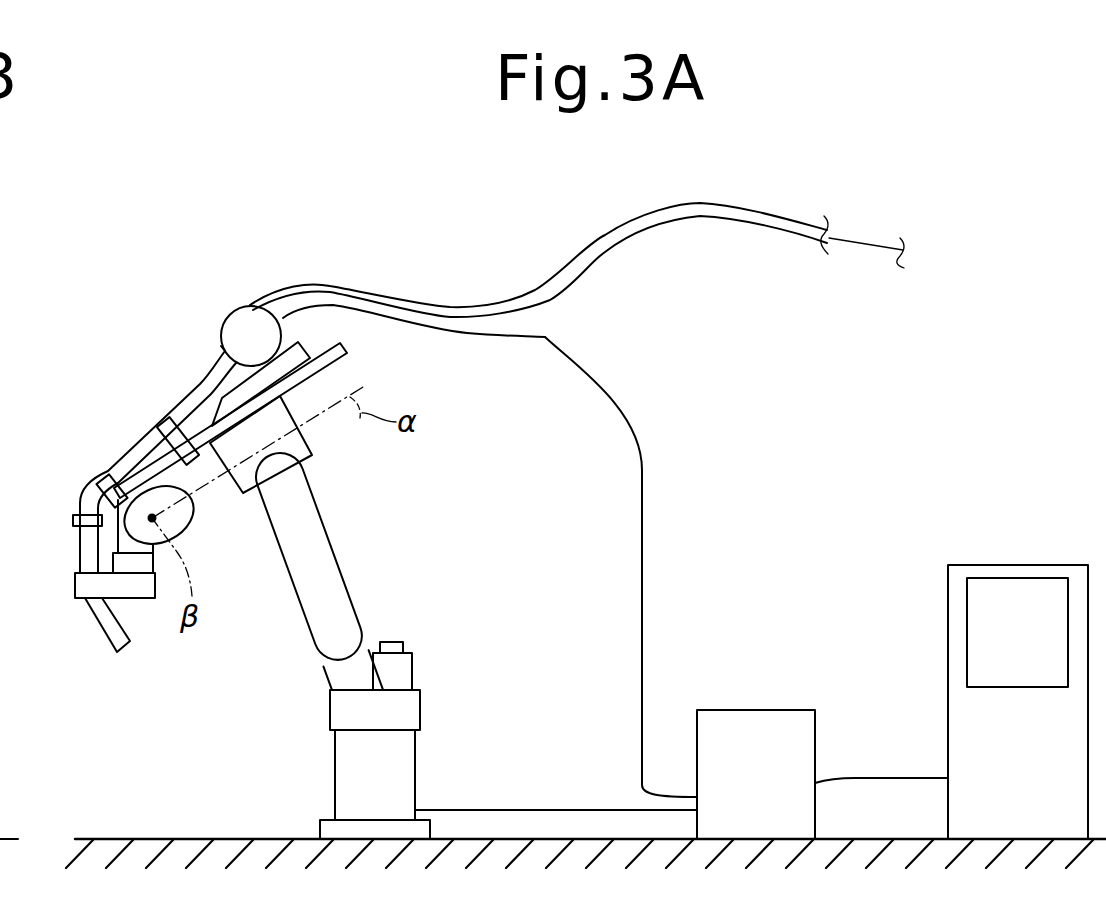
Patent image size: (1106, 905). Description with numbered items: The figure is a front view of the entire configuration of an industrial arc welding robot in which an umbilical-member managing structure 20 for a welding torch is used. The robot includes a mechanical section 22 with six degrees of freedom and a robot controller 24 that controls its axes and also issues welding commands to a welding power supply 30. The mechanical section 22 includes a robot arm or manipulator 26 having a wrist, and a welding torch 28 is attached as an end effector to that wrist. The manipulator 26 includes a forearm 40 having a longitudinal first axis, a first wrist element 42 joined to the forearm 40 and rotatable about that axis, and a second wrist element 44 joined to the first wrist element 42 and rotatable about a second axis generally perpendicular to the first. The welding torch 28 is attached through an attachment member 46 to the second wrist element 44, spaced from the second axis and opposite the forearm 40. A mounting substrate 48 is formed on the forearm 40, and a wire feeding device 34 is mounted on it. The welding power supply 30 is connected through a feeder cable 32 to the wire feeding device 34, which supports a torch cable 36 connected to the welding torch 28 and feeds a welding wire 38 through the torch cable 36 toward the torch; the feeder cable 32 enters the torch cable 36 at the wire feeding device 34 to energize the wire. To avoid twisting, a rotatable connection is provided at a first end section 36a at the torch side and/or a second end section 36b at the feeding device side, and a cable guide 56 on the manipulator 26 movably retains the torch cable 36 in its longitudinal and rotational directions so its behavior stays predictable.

The umbilical-member managing structure 20 is at (121, 229).
The mechanical section 22 is at (372, 533).
The robot controller 24 is at (1037, 553).
The manipulator 26 is at (278, 575).
The welding torch 28 is at (108, 633).
The welding power supply 30 is at (755, 730).
The feeder cable 32 is at (644, 497).
The wire feeding device 34 is at (243, 295).
The torch cable 36 is at (190, 378).
The first end section 36a is at (76, 513).
The second end section 36b is at (222, 345).
The welding wire 38 is at (868, 240).
The forearm 40 is at (312, 458).
The first wrist element 42 is at (218, 503).
The second wrist element 44 is at (133, 552).
The attachment member 46 is at (82, 587).
The mounting substrate 48 is at (350, 374).
The cable guide 56 is at (100, 477).